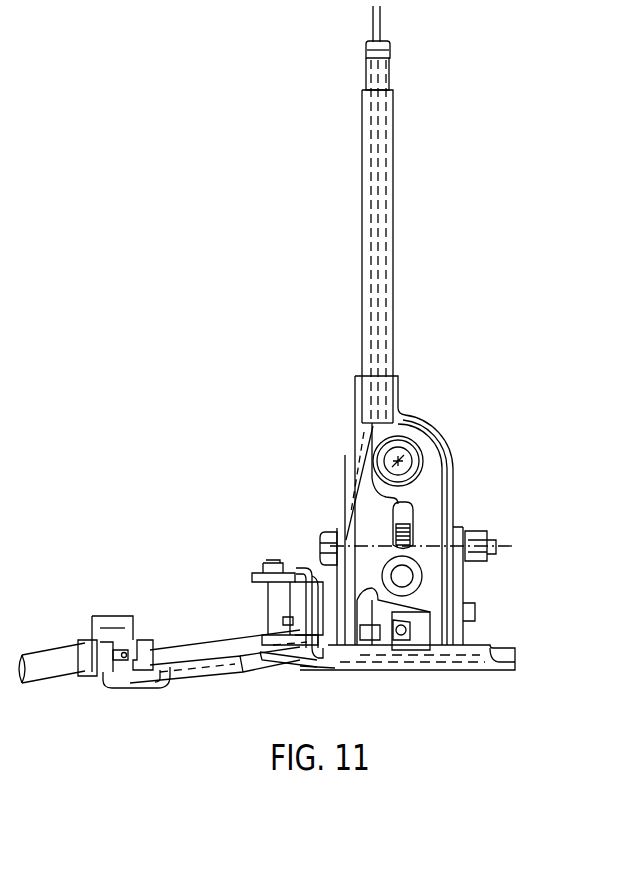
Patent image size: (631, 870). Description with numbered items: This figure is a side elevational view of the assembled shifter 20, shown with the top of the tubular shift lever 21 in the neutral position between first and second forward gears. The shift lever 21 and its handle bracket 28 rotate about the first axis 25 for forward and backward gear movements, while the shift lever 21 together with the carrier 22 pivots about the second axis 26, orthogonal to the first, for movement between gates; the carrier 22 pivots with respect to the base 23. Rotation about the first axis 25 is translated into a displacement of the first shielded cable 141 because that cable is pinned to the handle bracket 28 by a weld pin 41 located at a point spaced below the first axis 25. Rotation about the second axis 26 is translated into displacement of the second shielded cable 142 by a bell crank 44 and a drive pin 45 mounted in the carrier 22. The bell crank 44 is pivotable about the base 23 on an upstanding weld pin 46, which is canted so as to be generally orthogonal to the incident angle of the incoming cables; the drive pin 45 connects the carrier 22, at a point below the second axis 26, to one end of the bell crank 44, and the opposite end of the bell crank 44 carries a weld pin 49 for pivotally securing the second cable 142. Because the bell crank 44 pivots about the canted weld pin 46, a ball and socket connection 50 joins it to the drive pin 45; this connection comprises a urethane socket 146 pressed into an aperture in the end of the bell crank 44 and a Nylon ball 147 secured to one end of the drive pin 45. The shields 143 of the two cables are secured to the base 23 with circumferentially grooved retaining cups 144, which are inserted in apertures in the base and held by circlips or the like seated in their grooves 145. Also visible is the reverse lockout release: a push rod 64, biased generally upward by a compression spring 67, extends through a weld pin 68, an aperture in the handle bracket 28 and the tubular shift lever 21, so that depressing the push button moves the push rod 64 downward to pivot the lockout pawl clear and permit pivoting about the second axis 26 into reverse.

The shifter 20 is at (425, 171).
The shift lever 21 is at (393, 268).
The carrier 22 is at (432, 430).
The base 23 is at (133, 690).
The first axis 25 is at (405, 457).
The second axis 26 is at (498, 546).
The handle bracket 28 is at (393, 392).
The weld pin 41 is at (405, 652).
The bell crank 44 is at (296, 566).
The drive pin 45 is at (476, 612).
The weld pin 46 is at (268, 590).
The weld pin 49 is at (283, 621).
The ball and socket connection 50 is at (312, 558).
The push rod 64 is at (414, 504).
The compression spring 67 is at (416, 532).
The weld pin 68 is at (414, 578).
The first shielded cable 141 is at (128, 636).
The second shielded cable 142 is at (150, 642).
The shields 143 is at (49, 652).
The retaining cups 144 is at (135, 618).
The grooves 145 is at (103, 690).
The urethane socket 146 is at (290, 662).
The Nylon ball 147 is at (322, 668).